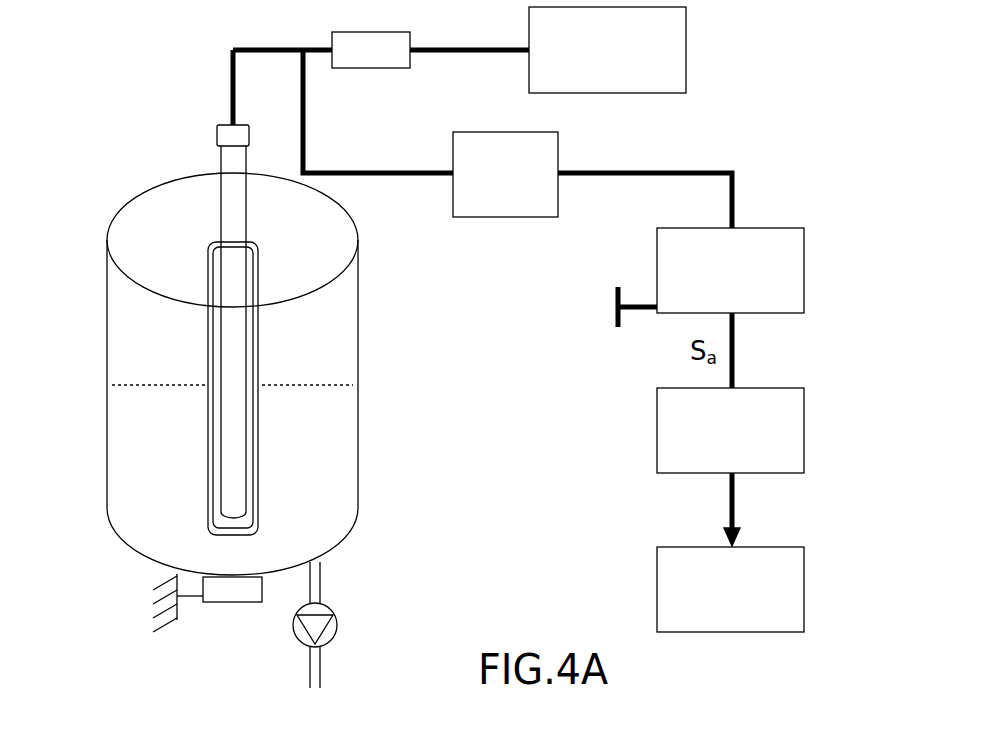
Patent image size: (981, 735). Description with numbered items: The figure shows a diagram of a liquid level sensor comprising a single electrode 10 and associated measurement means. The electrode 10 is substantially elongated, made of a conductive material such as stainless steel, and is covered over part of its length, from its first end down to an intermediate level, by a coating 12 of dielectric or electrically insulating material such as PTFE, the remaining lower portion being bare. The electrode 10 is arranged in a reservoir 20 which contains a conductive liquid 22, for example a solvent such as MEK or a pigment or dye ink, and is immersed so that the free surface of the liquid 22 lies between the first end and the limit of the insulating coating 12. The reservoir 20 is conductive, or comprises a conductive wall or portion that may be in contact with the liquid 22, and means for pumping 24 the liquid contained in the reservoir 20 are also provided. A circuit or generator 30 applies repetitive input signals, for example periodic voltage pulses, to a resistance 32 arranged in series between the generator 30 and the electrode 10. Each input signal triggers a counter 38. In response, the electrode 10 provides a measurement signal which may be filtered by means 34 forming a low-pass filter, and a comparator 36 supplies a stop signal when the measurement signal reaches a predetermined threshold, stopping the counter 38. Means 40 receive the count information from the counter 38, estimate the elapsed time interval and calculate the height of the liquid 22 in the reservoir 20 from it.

The electrode 10 is at (247, 213).
The coating 12 is at (258, 343).
The reservoir 20 is at (107, 305).
The conductive liquid 22 is at (172, 444).
The means for pumping 24 is at (337, 632).
The generator 30 is at (677, 25).
The resistance 32 is at (404, 40).
The low-pass filter 34 is at (548, 148).
The comparator 36 is at (790, 250).
The counter 38 is at (790, 415).
The calculating means 40 is at (790, 573).